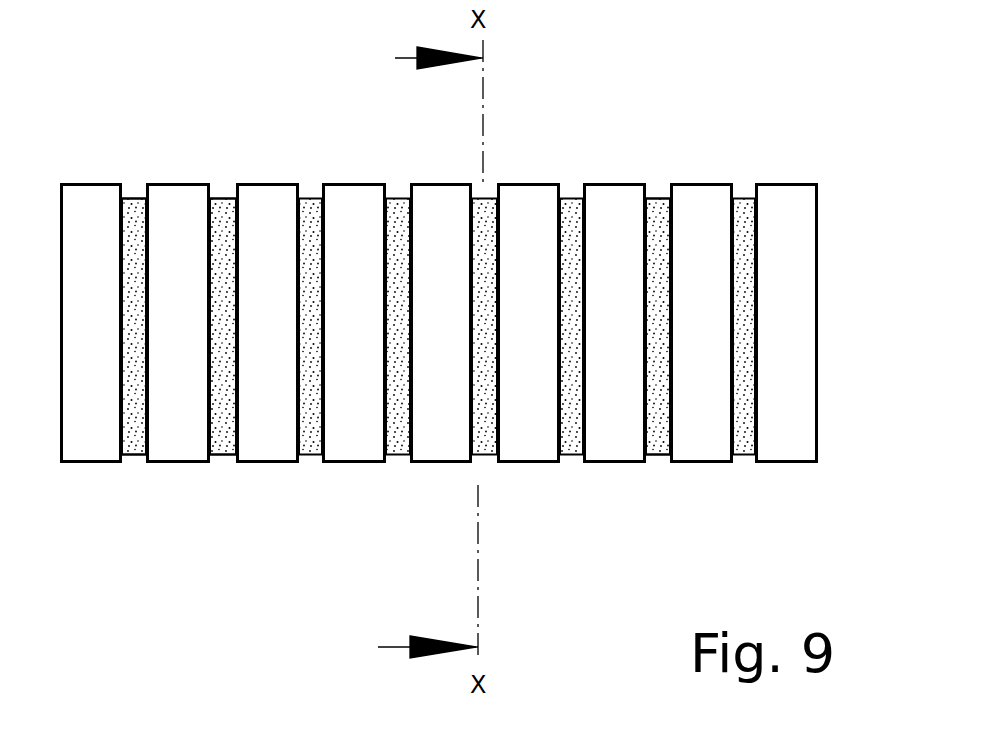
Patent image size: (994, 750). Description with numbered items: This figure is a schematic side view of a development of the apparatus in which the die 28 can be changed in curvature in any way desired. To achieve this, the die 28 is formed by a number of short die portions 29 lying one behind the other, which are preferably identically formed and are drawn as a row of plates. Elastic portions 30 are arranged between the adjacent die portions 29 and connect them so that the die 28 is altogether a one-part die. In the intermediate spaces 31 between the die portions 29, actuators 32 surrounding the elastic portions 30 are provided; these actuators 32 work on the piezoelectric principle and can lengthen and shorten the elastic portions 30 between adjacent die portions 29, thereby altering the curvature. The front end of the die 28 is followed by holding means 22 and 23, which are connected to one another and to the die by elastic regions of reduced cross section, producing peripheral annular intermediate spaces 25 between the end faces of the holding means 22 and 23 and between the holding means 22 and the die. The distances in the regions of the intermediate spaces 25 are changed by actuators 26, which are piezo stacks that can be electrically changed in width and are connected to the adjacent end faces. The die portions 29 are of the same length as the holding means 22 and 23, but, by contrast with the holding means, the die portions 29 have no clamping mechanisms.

The holding means 22 is at (177, 200).
The holding means 23 is at (100, 200).
The intermediate spaces 25 is at (140, 180).
The actuators 26 is at (133, 440).
The die 28 is at (673, 138).
The die portions 29 is at (358, 200).
The elastic portions 30 is at (658, 327).
The intermediate spaces 31 is at (573, 180).
The actuators 32 is at (655, 448).